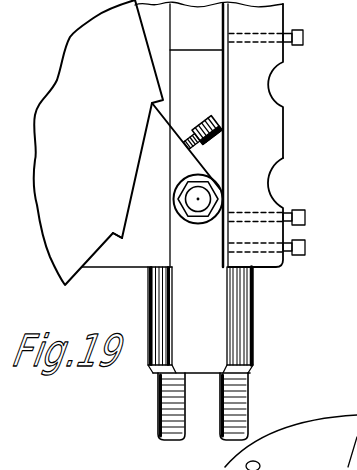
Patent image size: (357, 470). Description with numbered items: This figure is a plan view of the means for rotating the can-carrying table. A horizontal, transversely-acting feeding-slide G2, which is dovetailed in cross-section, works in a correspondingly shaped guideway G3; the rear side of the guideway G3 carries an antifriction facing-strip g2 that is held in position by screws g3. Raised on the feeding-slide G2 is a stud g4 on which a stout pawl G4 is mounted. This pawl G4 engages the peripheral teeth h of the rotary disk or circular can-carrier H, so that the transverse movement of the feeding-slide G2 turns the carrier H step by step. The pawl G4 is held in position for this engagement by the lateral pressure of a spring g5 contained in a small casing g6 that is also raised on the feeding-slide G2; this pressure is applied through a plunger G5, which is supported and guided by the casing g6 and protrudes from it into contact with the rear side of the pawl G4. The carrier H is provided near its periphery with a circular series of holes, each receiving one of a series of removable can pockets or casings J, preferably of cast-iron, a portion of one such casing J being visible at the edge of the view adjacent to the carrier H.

The rotary disk or circular can-carrier H is at (98, 142).
The peripheral teeth h is at (118, 232).
The pawl G4 is at (173, 190).
The stud g4 is at (198, 200).
The spring g5 is at (197, 124).
The casing g6 is at (212, 118).
The plunger G5 is at (217, 123).
The antifriction facing-strip g2 is at (230, 158).
The screws g3 is at (306, 217).
The guideway G3 is at (281, 264).
The feeding-slide G2 is at (255, 333).
The can pocket or casing J is at (350, 463).